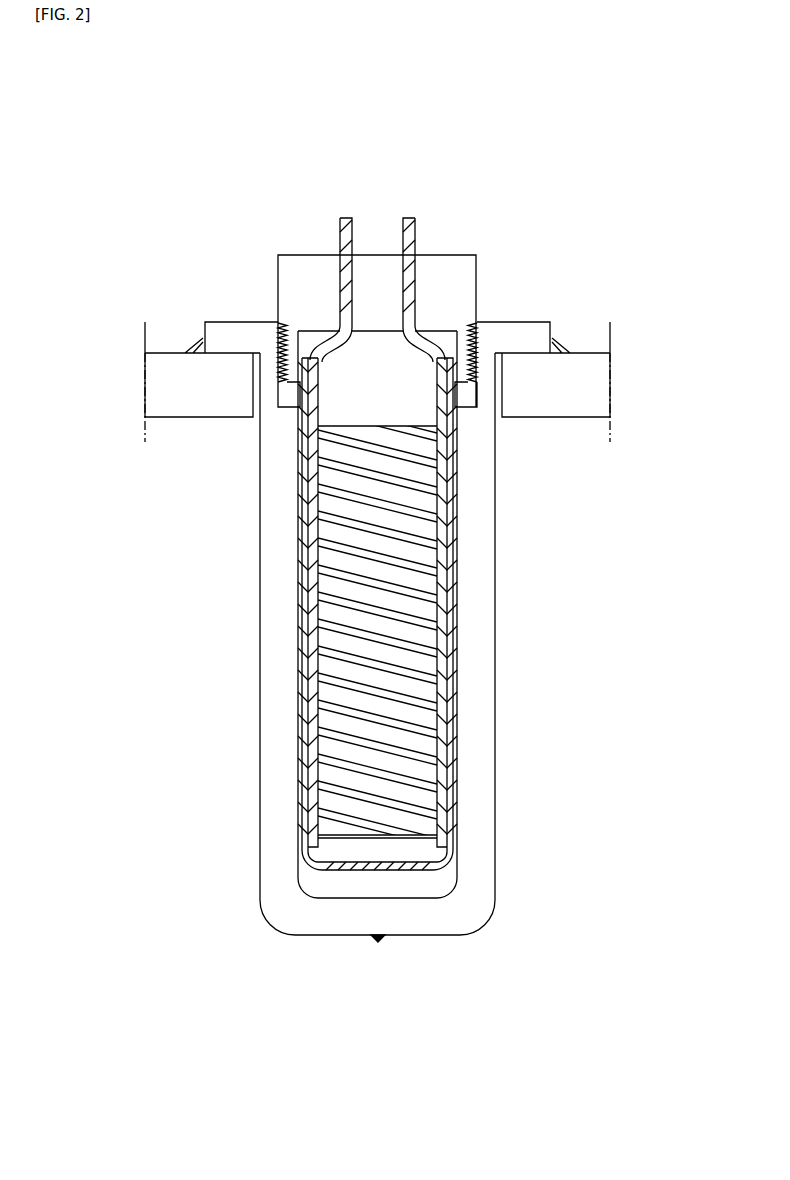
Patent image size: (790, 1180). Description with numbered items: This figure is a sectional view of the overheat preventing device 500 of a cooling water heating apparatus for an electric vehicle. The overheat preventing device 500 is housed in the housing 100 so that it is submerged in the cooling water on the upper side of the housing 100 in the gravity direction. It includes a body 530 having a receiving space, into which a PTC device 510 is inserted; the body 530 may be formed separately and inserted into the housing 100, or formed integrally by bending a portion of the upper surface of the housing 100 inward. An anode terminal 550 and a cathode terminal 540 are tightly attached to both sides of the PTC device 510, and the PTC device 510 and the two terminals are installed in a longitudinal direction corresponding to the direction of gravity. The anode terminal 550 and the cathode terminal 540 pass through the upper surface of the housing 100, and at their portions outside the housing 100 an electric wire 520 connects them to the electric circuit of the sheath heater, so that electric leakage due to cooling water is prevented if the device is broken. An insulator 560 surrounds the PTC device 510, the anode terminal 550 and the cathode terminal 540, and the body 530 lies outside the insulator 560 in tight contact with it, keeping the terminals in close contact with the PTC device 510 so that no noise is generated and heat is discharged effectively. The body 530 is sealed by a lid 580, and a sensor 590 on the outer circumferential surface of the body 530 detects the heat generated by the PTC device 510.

The housing 100 is at (580, 362).
The overheat preventing device 500 is at (511, 283).
The PTC device 510 is at (400, 577).
The electric wire 520 is at (348, 206).
The body 530 is at (478, 803).
The cathode terminal 540 is at (298, 642).
The anode terminal 550 is at (447, 640).
The insulator 560 is at (453, 716).
The lid 580 is at (305, 270).
The sensor 590 is at (378, 942).